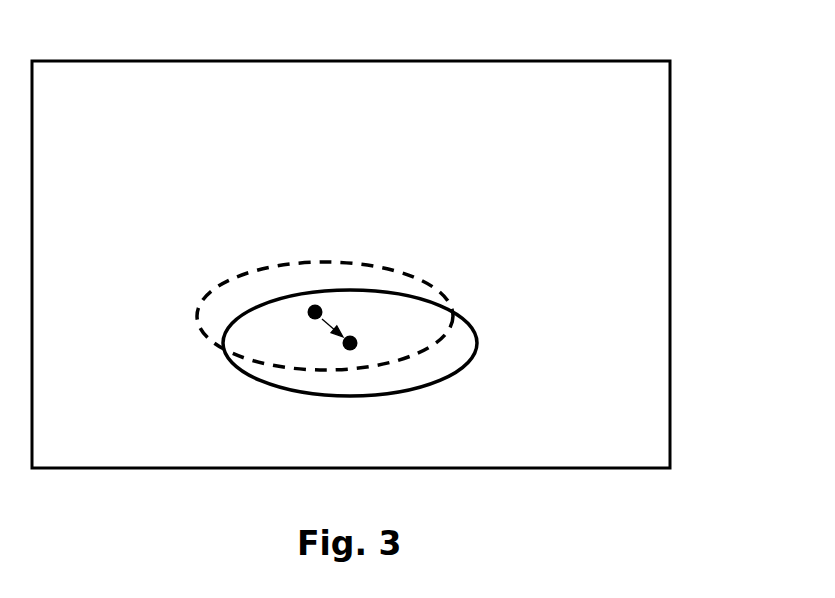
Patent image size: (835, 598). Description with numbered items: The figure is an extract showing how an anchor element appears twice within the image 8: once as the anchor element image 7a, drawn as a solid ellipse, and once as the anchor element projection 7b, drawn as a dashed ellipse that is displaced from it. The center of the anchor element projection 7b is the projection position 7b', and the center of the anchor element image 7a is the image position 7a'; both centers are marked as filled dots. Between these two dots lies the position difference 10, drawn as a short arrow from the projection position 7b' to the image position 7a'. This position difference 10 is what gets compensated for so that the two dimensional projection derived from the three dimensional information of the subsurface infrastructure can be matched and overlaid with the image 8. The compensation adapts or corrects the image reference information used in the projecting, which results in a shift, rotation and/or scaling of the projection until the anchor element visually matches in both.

The image 8 is at (199, 48).
The anchor element projection 7b is at (462, 273).
The anchor element image 7a is at (475, 322).
The projection position 7b' is at (347, 222).
The image position 7a' is at (416, 387).
The position difference 10 is at (316, 328).